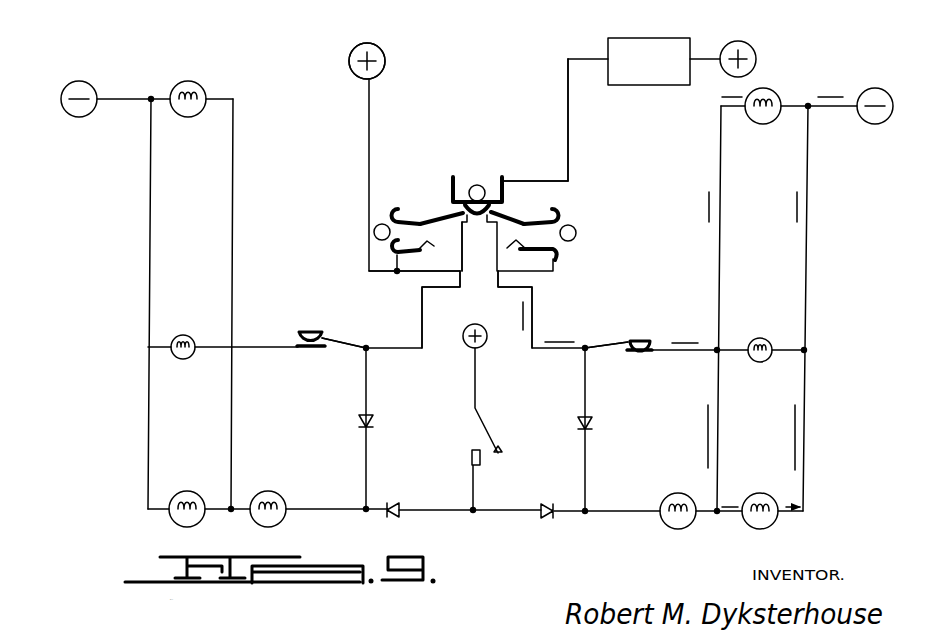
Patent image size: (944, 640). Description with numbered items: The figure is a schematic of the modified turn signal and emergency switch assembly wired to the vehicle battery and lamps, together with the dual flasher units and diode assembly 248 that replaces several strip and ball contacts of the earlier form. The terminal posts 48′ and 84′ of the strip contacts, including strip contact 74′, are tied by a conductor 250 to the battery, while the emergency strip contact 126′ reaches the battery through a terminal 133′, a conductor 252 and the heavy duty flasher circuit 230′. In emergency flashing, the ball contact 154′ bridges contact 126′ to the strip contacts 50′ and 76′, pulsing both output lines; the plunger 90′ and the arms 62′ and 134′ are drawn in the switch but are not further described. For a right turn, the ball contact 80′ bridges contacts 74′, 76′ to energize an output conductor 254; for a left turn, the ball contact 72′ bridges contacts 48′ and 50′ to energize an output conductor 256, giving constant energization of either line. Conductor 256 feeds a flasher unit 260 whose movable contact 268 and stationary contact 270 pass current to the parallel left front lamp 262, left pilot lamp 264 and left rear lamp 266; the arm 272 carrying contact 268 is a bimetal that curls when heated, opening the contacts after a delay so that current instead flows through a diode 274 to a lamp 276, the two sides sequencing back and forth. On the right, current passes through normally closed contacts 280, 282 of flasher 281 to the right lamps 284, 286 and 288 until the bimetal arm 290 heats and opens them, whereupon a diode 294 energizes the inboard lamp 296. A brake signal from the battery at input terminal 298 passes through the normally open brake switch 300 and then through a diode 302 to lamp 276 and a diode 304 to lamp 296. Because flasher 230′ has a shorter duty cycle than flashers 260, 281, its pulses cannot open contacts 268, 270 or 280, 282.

The heavy duty flasher circuit 230′ is at (686, 38).
The conductor 250 is at (368, 100).
The conductor 252 is at (515, 183).
The output conductor 254 is at (716, 48).
The output conductor 256 is at (423, 316).
The emergency strip contact 126′ is at (452, 178).
The terminal 133′ is at (504, 182).
The ball contact 154′ is at (472, 188).
The plunger 90′ is at (479, 243).
The strip contact 50′ is at (410, 192).
The contact arm 62′ is at (440, 215).
The contact arm 134′ is at (511, 205).
The strip contact 76′ is at (532, 224).
The ball contact 72′ is at (374, 234).
The ball contact 80′ is at (576, 228).
The terminal post 48′ is at (401, 256).
The strip contact 74′ is at (557, 250).
The terminal post 84′ is at (556, 265).
The dual flasher units and diode assembly 248 is at (603, 318).
The flasher unit 260 is at (298, 322).
The left front lamp 262 is at (190, 81).
The left pilot lamp 264 is at (183, 335).
The left rear lamp 266 is at (187, 491).
The movable contact 268 is at (312, 333).
The stationary contact 270 is at (309, 350).
The arm 272 is at (347, 343).
The diode 274 is at (373, 421).
The lamp 276 is at (270, 491).
The normally closed contact 280 is at (640, 342).
The flasher 281 is at (622, 334).
The normally closed contact 282 is at (650, 356).
The right lamp 284 is at (767, 88).
The right lamp 286 is at (760, 338).
The right lamp 288 is at (760, 493).
The bimetal arm 290 is at (606, 355).
The diode 294 is at (592, 425).
The inboard lamp 296 is at (692, 473).
The input terminal 298 is at (478, 348).
The brake switch 300 is at (504, 424).
The diode 302 is at (393, 502).
The diode 304 is at (549, 503).